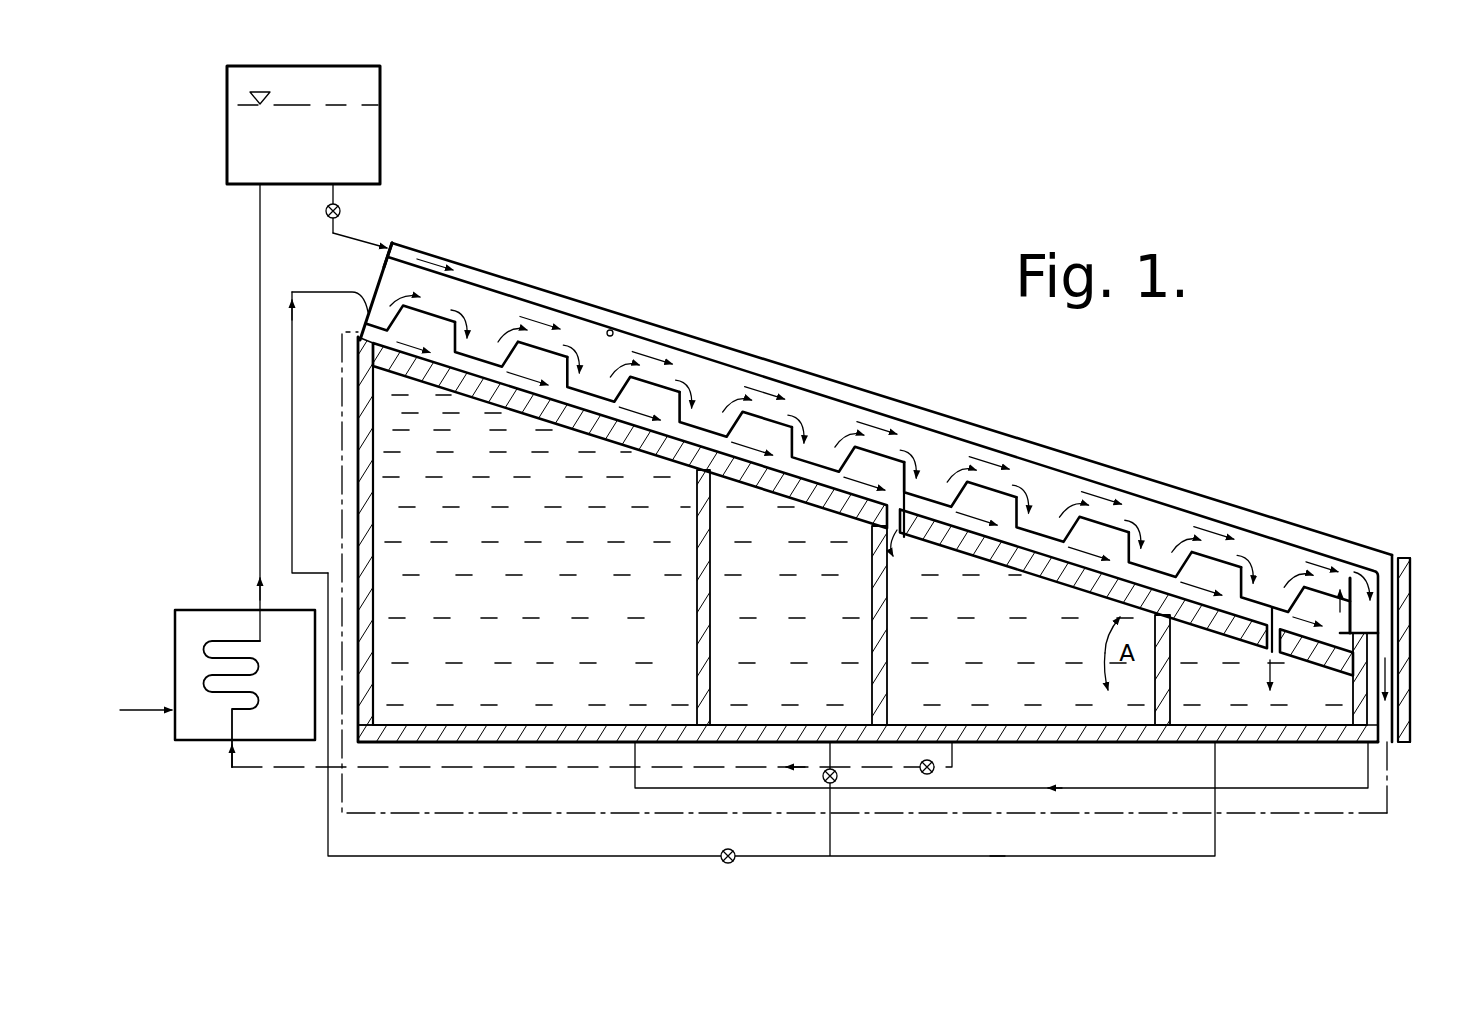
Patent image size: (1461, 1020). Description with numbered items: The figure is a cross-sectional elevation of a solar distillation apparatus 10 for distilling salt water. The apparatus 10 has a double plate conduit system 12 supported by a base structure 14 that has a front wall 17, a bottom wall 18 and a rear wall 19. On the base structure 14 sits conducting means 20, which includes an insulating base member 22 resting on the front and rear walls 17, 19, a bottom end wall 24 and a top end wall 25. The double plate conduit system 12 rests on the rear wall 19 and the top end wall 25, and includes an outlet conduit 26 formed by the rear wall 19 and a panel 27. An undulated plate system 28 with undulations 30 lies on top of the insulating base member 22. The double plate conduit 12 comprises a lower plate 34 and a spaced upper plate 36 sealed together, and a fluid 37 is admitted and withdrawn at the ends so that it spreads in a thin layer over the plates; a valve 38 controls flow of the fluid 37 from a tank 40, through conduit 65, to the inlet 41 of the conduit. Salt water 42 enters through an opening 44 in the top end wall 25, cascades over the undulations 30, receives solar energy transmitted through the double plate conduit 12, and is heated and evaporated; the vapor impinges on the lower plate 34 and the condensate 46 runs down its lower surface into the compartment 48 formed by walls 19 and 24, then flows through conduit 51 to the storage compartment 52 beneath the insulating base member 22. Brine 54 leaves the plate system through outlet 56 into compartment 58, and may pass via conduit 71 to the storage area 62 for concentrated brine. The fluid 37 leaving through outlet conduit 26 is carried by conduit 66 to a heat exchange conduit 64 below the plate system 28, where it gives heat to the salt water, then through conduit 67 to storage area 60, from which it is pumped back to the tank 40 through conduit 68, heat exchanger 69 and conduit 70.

The solar distillation apparatus 10 is at (770, 233).
The double plate conduit system 12 is at (880, 431).
The base structure 14 is at (873, 557).
The front wall 17 is at (369, 593).
The bottom wall 18 is at (538, 731).
The rear wall 19 is at (1406, 670).
The conducting means 20 is at (745, 503).
The insulating base member 22 is at (863, 509).
The bottom end wall 24 is at (1411, 594).
The top end wall 25 is at (383, 272).
The outlet conduit 26 is at (1385, 621).
The panel 27 is at (1404, 656).
The undulated plate system 28 is at (782, 408).
The undulations 30 is at (676, 400).
The lower plate 34 is at (613, 331).
The upper plate 36 is at (686, 333).
The fluid 37 is at (525, 285).
The valve 38 is at (341, 208).
The tank 40 is at (382, 88).
The inlet 41 is at (392, 240).
The salt water 42 is at (462, 321).
The opening 44 is at (364, 303).
The condensate 46 is at (1090, 512).
The compartment 48 is at (1373, 636).
The conduit 51 is at (1368, 775).
The compartment 52 is at (556, 552).
The brine 54 is at (1243, 568).
The outlet 56 is at (1267, 650).
The compartment 58 is at (1317, 722).
The storage area 60 is at (1009, 652).
The storage area 62 is at (776, 612).
The heat exchange conduit 64 is at (487, 375).
The conduit 65 is at (352, 236).
The conduit 66 is at (1061, 813).
The conduit 67 is at (906, 548).
The conduit 68 is at (563, 768).
The heat exchanger 69 is at (203, 609).
The conduit 70 is at (258, 503).
The conduit 71 is at (1120, 857).